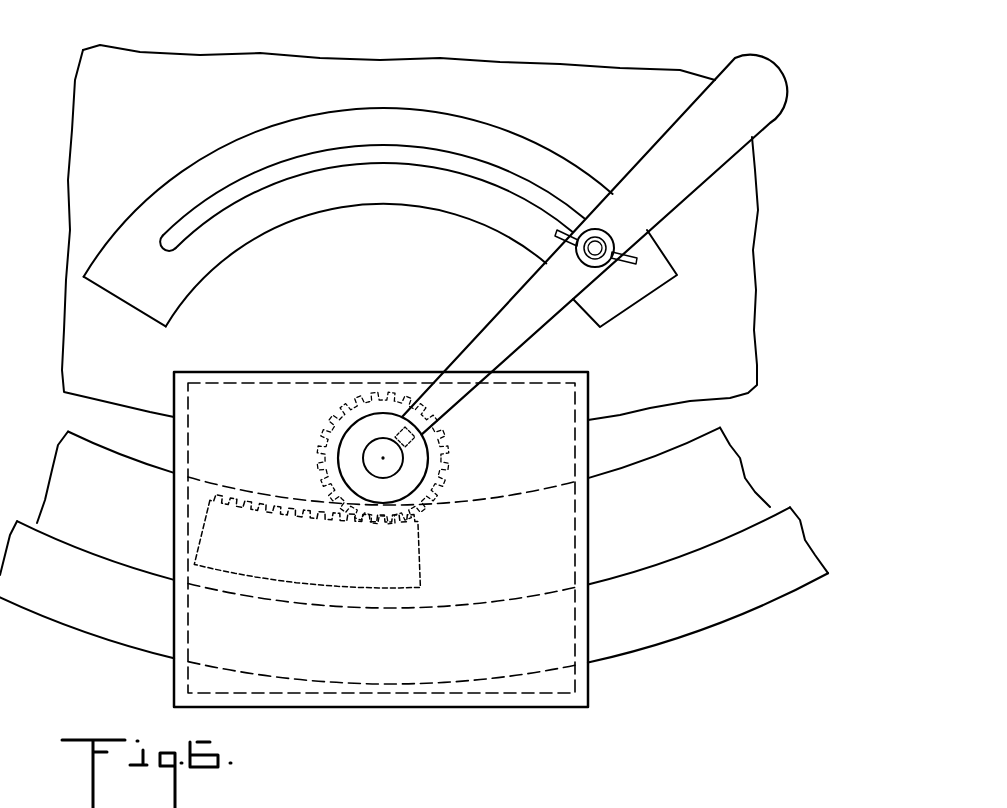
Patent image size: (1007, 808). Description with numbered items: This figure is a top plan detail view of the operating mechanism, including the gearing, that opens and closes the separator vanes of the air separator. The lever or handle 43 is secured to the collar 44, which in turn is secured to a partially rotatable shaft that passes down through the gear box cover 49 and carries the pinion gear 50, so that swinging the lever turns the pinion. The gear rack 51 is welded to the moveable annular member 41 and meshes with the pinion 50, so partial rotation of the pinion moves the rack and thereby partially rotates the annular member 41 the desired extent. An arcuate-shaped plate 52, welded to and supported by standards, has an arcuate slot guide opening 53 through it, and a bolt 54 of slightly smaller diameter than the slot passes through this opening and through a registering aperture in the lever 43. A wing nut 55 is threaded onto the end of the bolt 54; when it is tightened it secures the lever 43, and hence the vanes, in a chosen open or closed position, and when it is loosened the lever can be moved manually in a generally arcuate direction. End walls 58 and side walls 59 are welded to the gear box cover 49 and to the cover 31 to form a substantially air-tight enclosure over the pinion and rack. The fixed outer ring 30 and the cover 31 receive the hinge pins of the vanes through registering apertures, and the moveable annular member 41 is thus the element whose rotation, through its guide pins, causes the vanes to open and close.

The fixed outer ring 30 is at (53, 600).
The cover 31 is at (752, 254).
The moveable annular member 41 is at (118, 480).
The lever 43 is at (773, 82).
The collar 44 is at (373, 428).
The gear box cover 49 is at (563, 457).
The pinion gear 50 is at (453, 450).
The gear rack 51 is at (275, 467).
The arcuate-shaped plate 52 is at (291, 206).
The arcuate-shaped slot guide opening 53 is at (447, 163).
The bolt 54 is at (605, 235).
The wing nut 55 is at (610, 263).
The end walls 58 is at (186, 505).
The side walls 59 is at (283, 374).